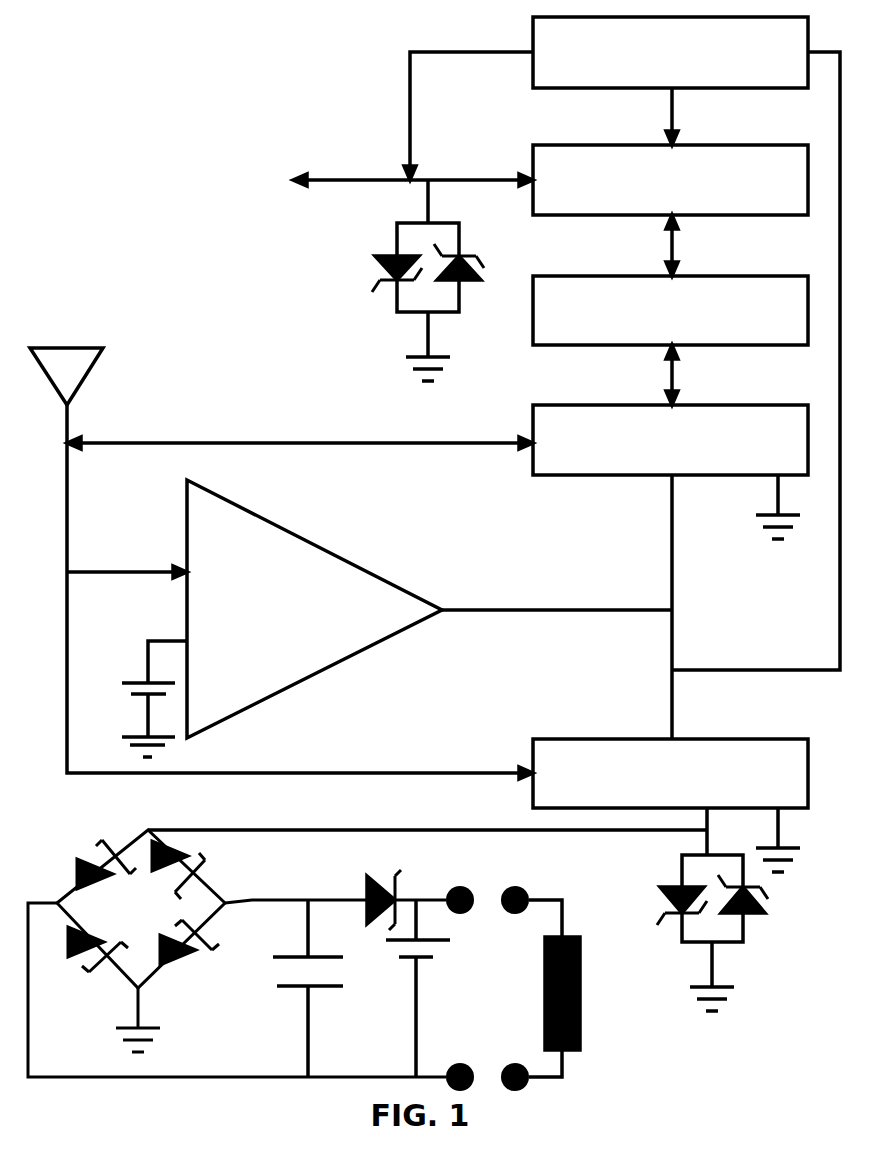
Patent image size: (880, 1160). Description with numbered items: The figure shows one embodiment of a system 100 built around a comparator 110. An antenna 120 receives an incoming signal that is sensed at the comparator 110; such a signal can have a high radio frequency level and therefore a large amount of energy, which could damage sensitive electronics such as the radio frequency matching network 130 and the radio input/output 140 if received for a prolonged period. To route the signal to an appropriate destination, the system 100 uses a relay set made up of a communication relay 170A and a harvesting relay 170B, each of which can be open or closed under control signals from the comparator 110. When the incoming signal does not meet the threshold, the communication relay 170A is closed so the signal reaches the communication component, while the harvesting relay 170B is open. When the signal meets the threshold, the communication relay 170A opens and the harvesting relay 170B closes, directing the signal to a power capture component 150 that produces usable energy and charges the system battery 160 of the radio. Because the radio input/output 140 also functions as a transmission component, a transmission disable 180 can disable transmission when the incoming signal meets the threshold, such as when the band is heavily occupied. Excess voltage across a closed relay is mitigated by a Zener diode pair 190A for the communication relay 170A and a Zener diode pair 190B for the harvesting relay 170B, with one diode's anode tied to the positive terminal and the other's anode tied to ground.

The system 100 is at (174, 48).
The comparator 110 is at (290, 530).
The antenna 120 is at (58, 348).
The radio frequency matching network 130 is at (609, 347).
The radio input/output 140 is at (603, 217).
The power capture component 150 is at (262, 899).
The system battery 160 is at (580, 958).
The communication relay 170A is at (617, 477).
The harvesting relay 170B is at (721, 737).
The transmission disable 180 is at (601, 90).
The Zener diode pair 190A is at (408, 314).
The Zener diode pair 190B is at (697, 944).